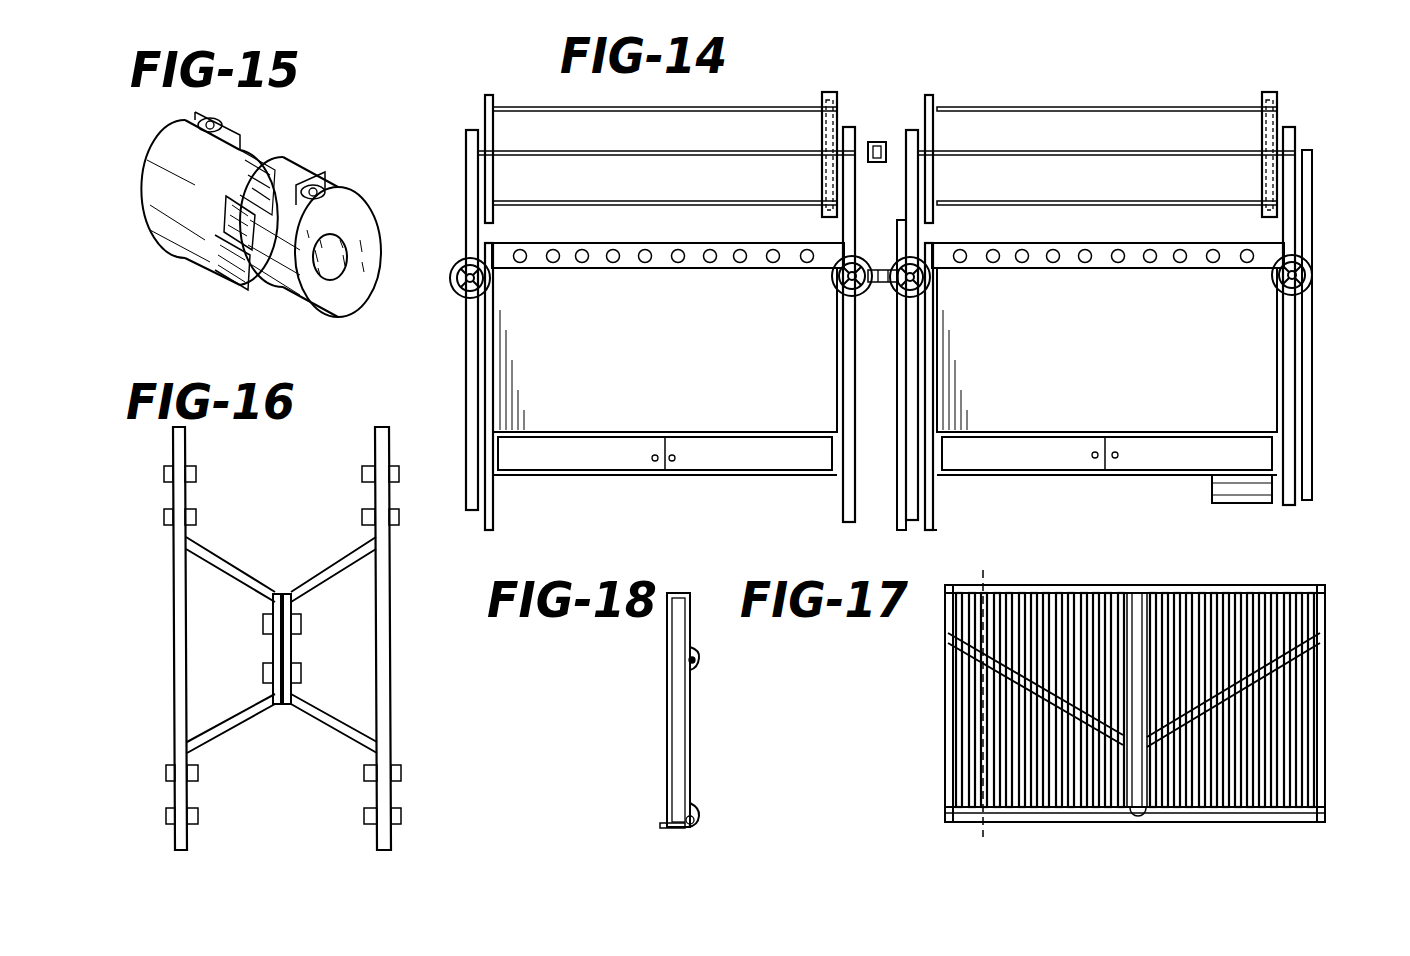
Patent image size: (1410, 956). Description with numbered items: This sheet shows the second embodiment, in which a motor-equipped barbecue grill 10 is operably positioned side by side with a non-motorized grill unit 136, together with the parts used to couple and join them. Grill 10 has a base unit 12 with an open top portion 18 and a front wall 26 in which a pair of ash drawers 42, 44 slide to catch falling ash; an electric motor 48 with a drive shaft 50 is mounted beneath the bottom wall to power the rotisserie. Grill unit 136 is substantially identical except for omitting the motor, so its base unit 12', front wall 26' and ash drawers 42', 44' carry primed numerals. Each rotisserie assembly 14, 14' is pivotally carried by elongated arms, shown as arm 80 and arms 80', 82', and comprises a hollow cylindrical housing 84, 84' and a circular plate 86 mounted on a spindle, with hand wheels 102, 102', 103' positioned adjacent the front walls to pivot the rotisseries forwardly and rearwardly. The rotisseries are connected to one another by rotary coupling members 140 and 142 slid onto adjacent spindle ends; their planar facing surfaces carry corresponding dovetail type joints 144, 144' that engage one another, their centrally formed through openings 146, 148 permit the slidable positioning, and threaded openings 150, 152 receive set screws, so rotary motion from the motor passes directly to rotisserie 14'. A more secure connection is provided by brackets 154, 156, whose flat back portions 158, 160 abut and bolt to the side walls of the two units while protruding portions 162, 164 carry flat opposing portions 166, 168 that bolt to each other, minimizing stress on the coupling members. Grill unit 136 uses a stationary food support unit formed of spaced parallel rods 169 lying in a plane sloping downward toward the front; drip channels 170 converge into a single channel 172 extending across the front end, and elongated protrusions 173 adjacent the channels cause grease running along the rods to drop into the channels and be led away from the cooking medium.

In FIG. 14, the barbecue grill 10 is at (1107, 486).
In FIG. 14, the base unit 12 is at (1142, 425).
In FIG. 14, the base unit 12' is at (450, 445).
In FIG. 14, the rotisserie assembly 14 is at (1155, 251).
In FIG. 14, the rotisserie assembly 14' is at (618, 252).
In FIG. 17, the open top portion 18 is at (983, 570).
In FIG. 14, the front wall 26 is at (1107, 405).
In FIG. 14, the front wall 26' is at (665, 408).
In FIG. 14, the ash drawer 42 is at (1038, 476).
In FIG. 14, the ash drawer 42' is at (613, 481).
In FIG. 14, the ash drawer 44 is at (1155, 481).
In FIG. 14, the ash drawer 44' is at (732, 485).
In FIG. 14, the electric motor 48 is at (1242, 513).
In FIG. 14, the drive shaft 50 is at (1332, 345).
In FIG. 14, the elongated arm 80 is at (1324, 310).
In FIG. 14, the elongated arm 80' is at (877, 291).
In FIG. 14, the elongated arm 82' is at (665, 303).
In FIG. 14, the cylindrical housing 84 is at (1289, 126).
In FIG. 14, the cylindrical housing 84' is at (850, 126).
In FIG. 14, the circular plate 86 is at (488, 95).
In FIG. 14, the hand wheel 102 is at (1120, 249).
In FIG. 14, the hand wheel 102' is at (818, 293).
In FIG. 14, the hand wheel 103' is at (448, 302).
In FIG. 14, the grill unit 136 is at (678, 488).
In FIG. 14, the rotary coupling member 140 is at (926, 166).
In FIG. 15, the rotary coupling member 140 is at (346, 195).
In FIG. 14, the rotary coupling member 142 is at (888, 338).
In FIG. 15, the rotary coupling member 142 is at (226, 122).
In FIG. 15, the dovetail type joint 144 is at (250, 286).
In FIG. 15, the dovetail type joint 144' is at (290, 202).
In FIG. 15, the through opening 146 is at (332, 258).
In FIG. 15, the through opening 148 is at (236, 242).
In FIG. 15, the threaded opening 150 is at (314, 178).
In FIG. 15, the threaded opening 152 is at (200, 117).
In FIG. 16, the bracket 154 is at (330, 543).
In FIG. 16, the bracket 156 is at (233, 561).
In FIG. 16, the back portion 158 is at (391, 618).
In FIG. 16, the back portion 160 is at (250, 655).
In FIG. 16, the protruding portion 162 is at (328, 728).
In FIG. 16, the protruding portion 164 is at (224, 728).
In FIG. 16, the flat opposing portion 166 is at (291, 650).
In FIG. 16, the flat opposing portion 168 is at (270, 632).
In FIG. 18, the rods 169 is at (667, 706).
In FIG. 17, the rods 169 is at (1310, 756).
In FIG. 18, the drip channel 170 is at (697, 656).
In FIG. 17, the drip channel 170 is at (1140, 605).
In FIG. 18, the channel 172 is at (696, 806).
In FIG. 17, the channel 172 is at (1226, 810).
In FIG. 18, the elongated protrusion 173 is at (690, 672).